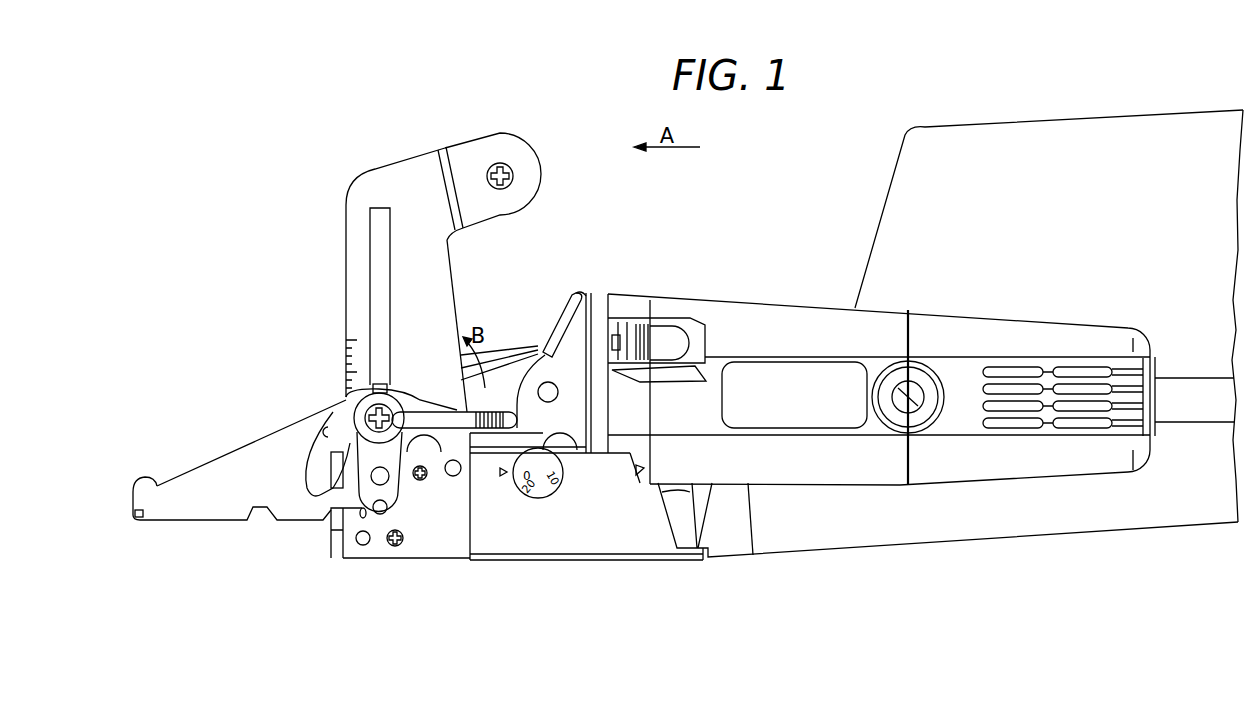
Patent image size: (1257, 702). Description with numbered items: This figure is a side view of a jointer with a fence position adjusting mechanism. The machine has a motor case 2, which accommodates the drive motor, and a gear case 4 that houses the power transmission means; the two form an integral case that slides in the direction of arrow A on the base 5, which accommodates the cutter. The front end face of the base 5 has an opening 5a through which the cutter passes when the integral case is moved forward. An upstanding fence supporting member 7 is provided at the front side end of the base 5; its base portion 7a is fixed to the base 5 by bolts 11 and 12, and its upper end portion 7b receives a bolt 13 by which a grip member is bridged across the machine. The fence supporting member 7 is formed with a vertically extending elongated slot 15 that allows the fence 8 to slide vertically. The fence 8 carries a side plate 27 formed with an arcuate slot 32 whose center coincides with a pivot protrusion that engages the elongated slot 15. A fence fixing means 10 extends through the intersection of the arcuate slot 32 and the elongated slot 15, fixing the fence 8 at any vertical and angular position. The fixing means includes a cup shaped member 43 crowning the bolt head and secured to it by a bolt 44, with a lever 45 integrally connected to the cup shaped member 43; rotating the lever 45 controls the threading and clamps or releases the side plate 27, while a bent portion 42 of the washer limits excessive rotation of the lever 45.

The motor case 2 is at (921, 316).
The gear case 4 is at (578, 292).
The base 5 is at (675, 529).
The opening 5a is at (328, 535).
The fence supporting member 7 is at (362, 174).
The base portion 7a is at (462, 548).
The upper end portion 7b is at (455, 147).
The fence 8 is at (203, 458).
The fence fixing means 10 is at (412, 392).
The bolt 11 is at (398, 547).
The bolt 12 is at (423, 481).
The bolt 13 is at (507, 169).
The elongated slot 15 is at (372, 222).
The side plate 27 is at (238, 452).
The arcuate slot 32 is at (323, 430).
The bent portion 42 is at (386, 383).
The cup shaped member 43 is at (357, 410).
The bolt 44 is at (395, 413).
The lever 45 is at (511, 418).